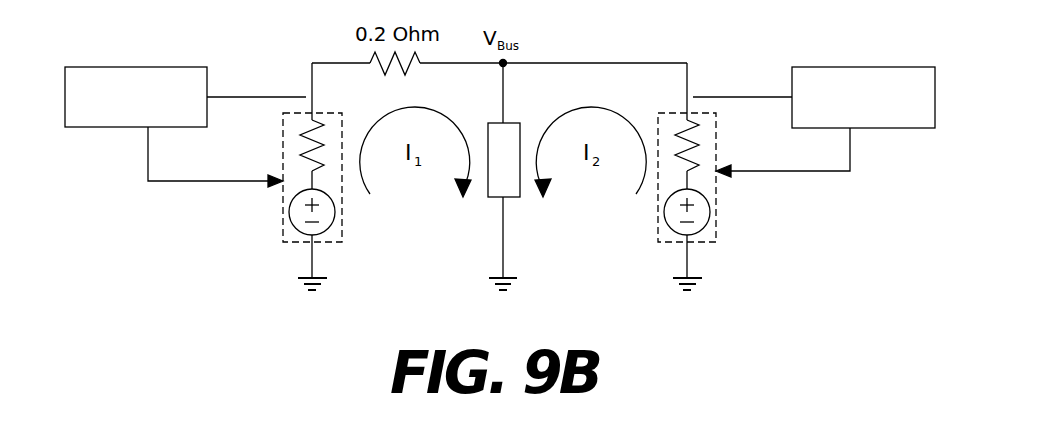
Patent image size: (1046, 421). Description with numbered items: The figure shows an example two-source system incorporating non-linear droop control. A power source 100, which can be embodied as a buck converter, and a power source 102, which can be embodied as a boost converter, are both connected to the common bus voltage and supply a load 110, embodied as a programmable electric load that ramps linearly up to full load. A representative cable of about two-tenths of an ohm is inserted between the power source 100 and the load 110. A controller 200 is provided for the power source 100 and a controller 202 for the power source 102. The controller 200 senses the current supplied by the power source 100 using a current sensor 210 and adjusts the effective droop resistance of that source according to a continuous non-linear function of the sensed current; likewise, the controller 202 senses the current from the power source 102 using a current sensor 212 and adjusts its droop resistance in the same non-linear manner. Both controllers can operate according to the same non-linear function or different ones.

The power source 100 is at (283, 243).
The power source 102 is at (716, 242).
The load 110 is at (503, 193).
The controller 200 is at (155, 124).
The controller 202 is at (881, 122).
The current sensor 210 is at (307, 94).
The current sensor 212 is at (689, 94).